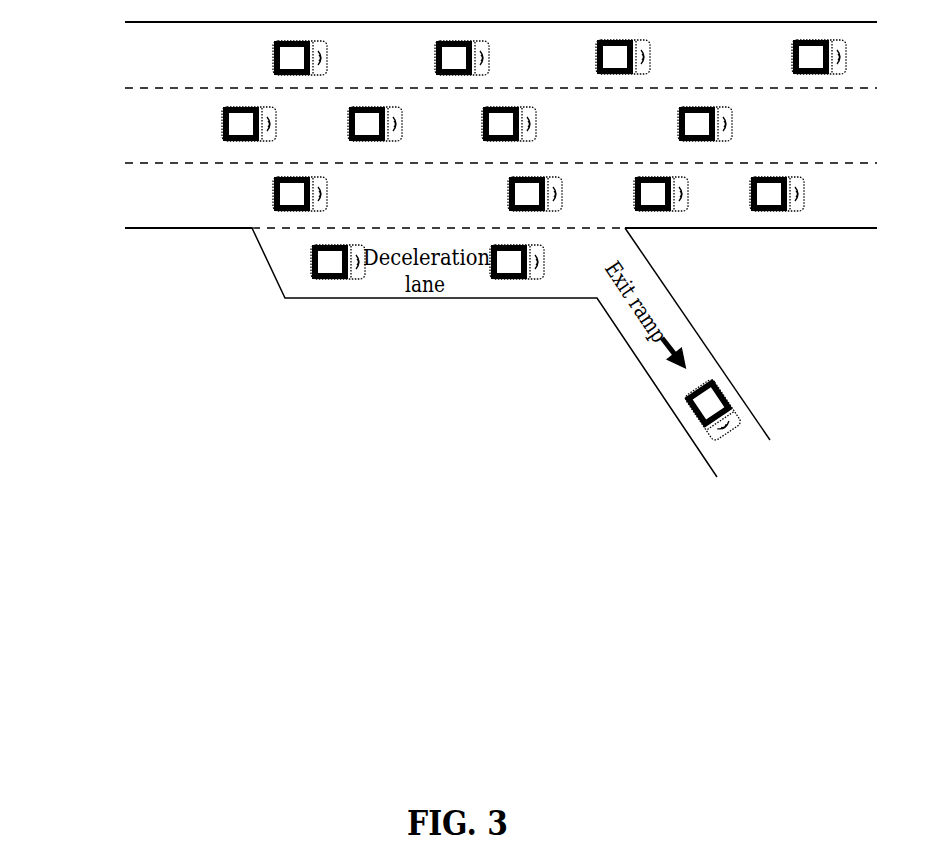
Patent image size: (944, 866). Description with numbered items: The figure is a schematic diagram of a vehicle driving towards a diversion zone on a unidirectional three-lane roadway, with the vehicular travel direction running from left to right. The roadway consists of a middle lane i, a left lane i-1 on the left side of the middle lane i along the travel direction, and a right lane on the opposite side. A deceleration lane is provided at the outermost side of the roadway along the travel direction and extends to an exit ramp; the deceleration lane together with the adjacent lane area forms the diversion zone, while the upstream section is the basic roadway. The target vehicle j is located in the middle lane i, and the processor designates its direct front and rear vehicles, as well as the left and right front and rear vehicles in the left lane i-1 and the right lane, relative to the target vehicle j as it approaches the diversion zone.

The left lane i-1 is at (445, 57).
The middle lane i is at (388, 124).
The target vehicle j is at (400, 146).